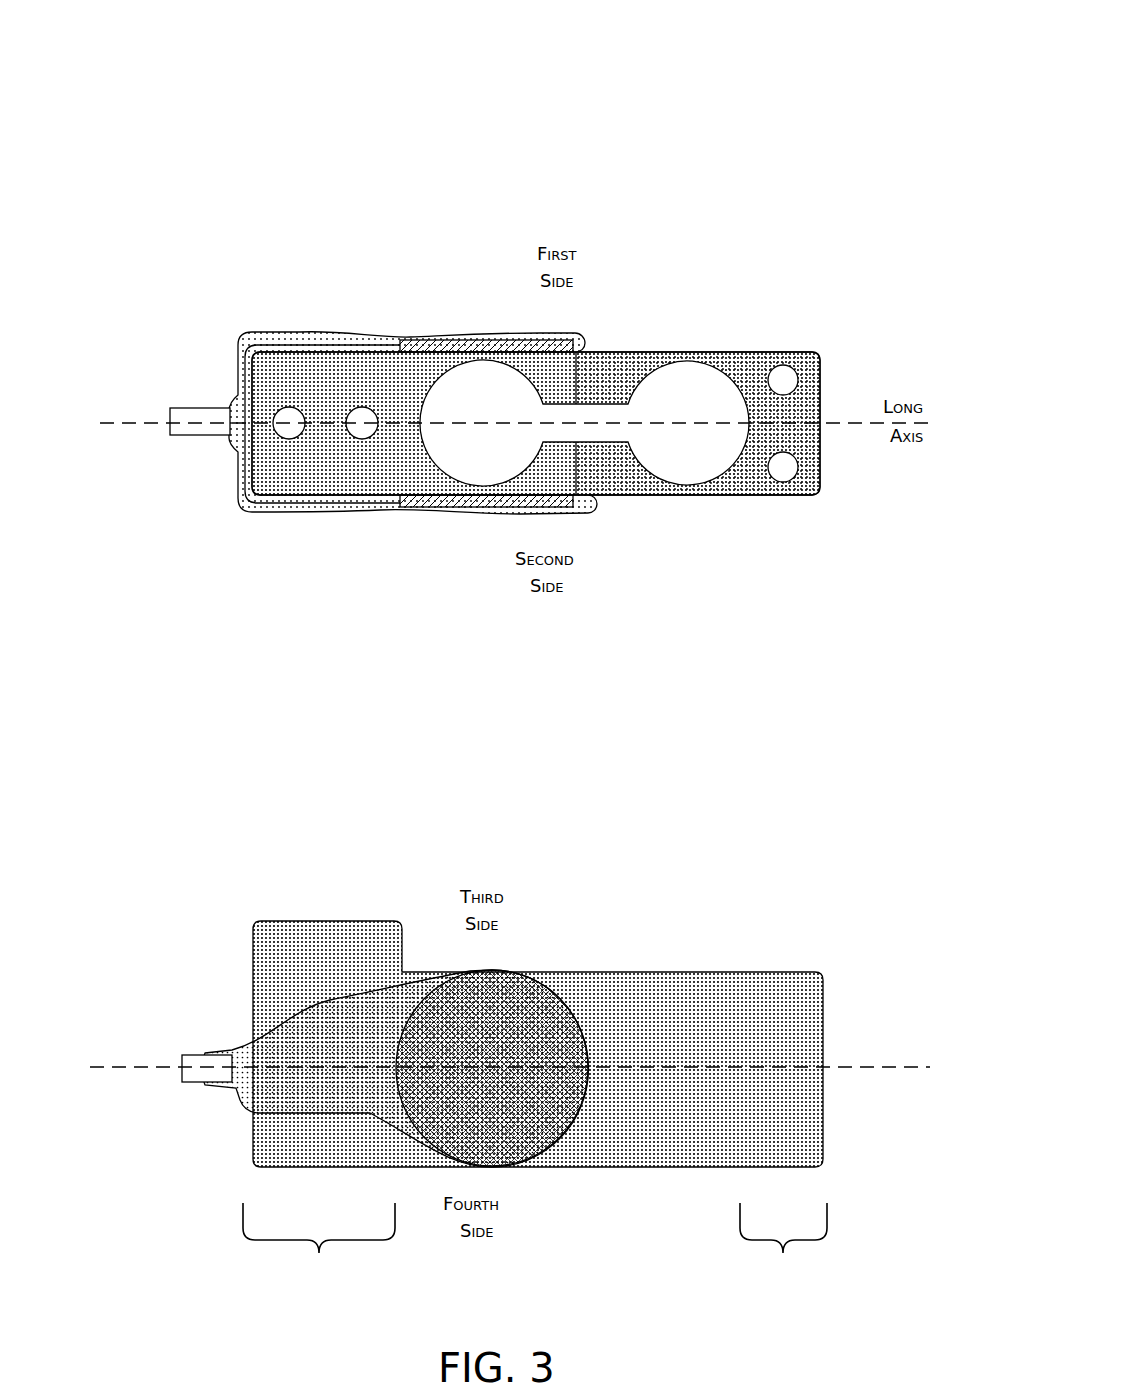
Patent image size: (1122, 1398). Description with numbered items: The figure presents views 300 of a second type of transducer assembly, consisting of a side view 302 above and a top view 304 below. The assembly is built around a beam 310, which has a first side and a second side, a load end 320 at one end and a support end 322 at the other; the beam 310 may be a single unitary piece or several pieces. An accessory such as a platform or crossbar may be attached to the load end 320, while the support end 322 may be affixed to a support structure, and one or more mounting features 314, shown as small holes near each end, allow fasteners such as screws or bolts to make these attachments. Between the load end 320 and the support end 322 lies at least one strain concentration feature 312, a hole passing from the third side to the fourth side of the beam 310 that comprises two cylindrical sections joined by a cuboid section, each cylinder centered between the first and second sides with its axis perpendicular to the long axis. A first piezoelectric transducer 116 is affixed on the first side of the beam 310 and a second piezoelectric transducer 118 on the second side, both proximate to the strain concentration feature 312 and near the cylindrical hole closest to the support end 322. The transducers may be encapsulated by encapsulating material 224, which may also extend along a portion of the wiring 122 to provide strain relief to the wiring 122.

The views 300 is at (812, 45).
The side view 302 is at (270, 113).
The top view 304 is at (307, 820).
The beam 310 is at (343, 378).
The strain concentration feature 312 is at (688, 413).
The mounting features 314 is at (782, 385).
The first piezoelectric transducer 116 is at (493, 1023).
The second piezoelectric transducer 118 is at (487, 507).
The wiring 122 is at (242, 387).
The encapsulating material 224 is at (185, 1215).
The load end 320 is at (319, 1244).
The support end 322 is at (777, 1245).